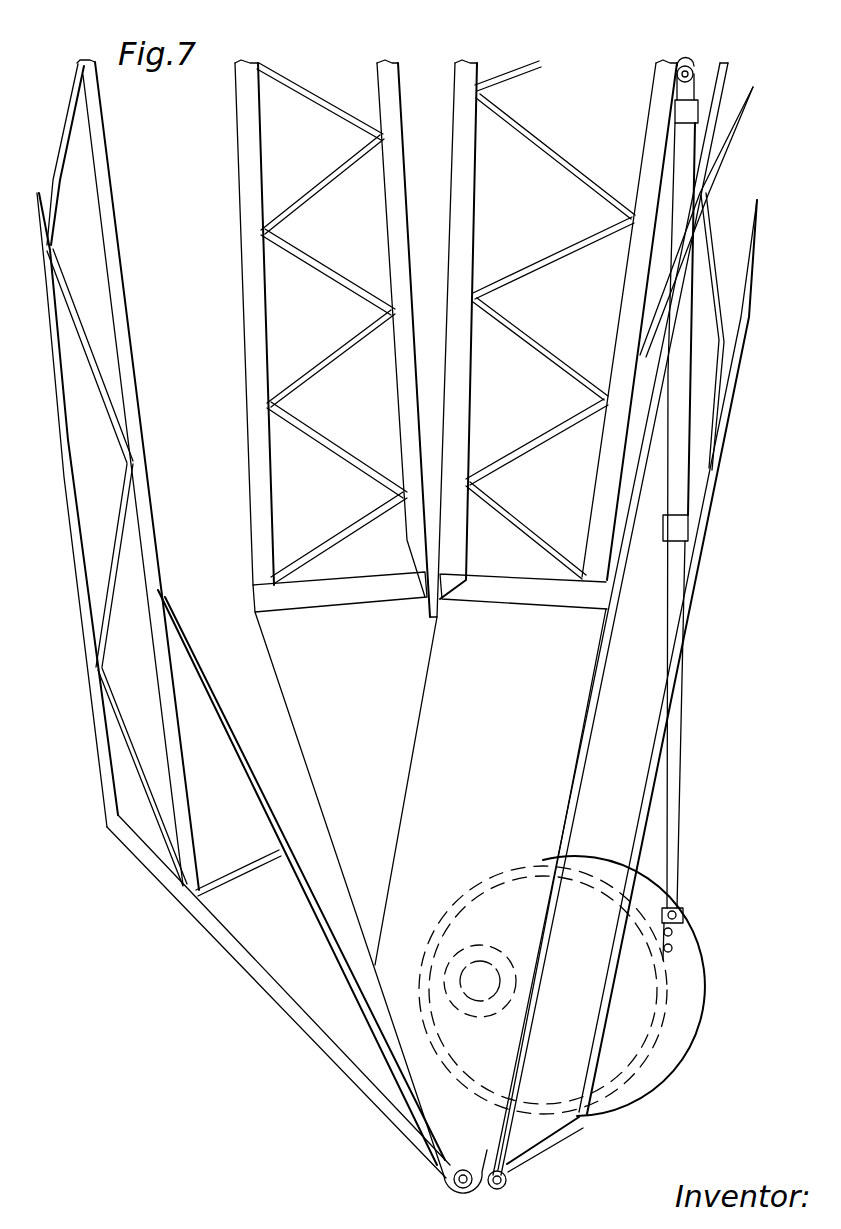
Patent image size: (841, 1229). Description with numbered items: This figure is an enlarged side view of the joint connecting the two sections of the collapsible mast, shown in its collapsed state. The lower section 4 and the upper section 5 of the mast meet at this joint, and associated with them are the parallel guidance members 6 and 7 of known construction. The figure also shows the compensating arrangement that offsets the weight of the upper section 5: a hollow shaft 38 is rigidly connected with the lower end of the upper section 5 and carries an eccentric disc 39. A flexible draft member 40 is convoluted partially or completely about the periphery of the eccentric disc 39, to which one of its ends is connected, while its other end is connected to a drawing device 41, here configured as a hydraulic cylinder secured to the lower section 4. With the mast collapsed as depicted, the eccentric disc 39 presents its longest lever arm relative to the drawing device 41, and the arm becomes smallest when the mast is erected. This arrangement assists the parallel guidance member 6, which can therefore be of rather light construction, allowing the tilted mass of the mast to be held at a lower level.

The lower section 4 is at (598, 547).
The upper section 5 is at (240, 288).
The parallel guidance member 6 is at (706, 473).
The parallel guidance member 7 is at (130, 352).
The hollow shaft 38 is at (467, 955).
The eccentric disc 39 is at (658, 1000).
The flexible draft member 40 is at (674, 945).
The drawing device 41 is at (681, 500).